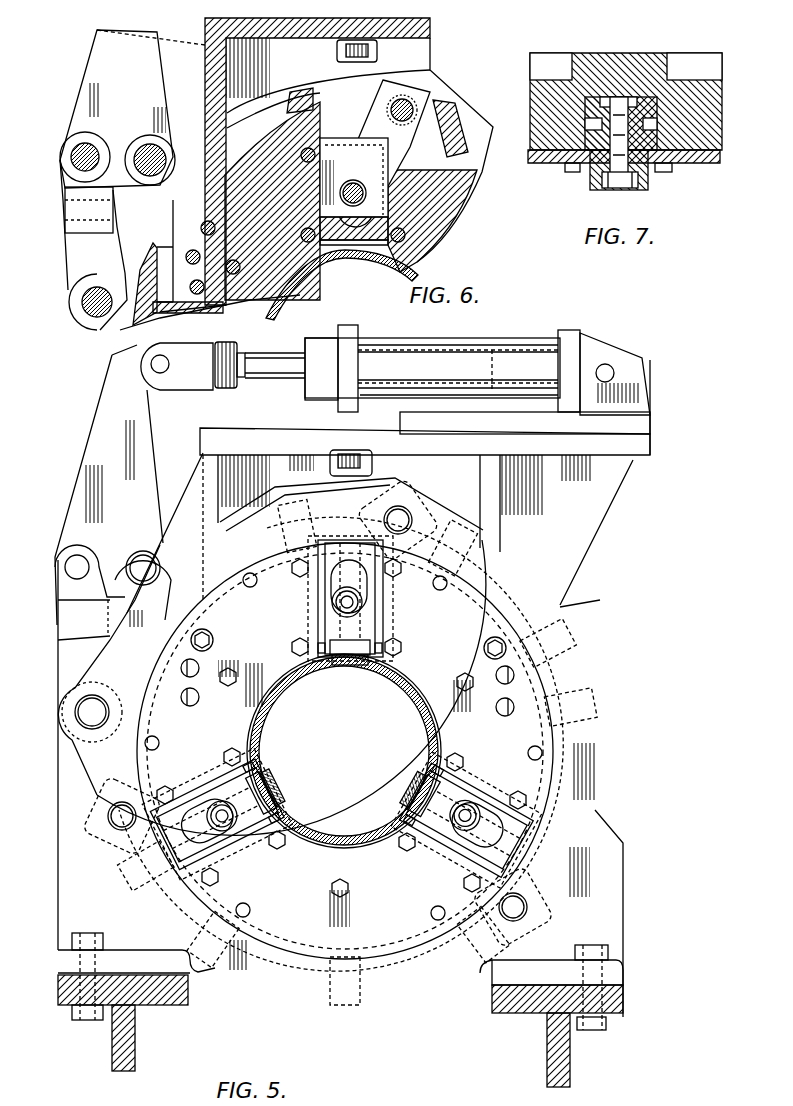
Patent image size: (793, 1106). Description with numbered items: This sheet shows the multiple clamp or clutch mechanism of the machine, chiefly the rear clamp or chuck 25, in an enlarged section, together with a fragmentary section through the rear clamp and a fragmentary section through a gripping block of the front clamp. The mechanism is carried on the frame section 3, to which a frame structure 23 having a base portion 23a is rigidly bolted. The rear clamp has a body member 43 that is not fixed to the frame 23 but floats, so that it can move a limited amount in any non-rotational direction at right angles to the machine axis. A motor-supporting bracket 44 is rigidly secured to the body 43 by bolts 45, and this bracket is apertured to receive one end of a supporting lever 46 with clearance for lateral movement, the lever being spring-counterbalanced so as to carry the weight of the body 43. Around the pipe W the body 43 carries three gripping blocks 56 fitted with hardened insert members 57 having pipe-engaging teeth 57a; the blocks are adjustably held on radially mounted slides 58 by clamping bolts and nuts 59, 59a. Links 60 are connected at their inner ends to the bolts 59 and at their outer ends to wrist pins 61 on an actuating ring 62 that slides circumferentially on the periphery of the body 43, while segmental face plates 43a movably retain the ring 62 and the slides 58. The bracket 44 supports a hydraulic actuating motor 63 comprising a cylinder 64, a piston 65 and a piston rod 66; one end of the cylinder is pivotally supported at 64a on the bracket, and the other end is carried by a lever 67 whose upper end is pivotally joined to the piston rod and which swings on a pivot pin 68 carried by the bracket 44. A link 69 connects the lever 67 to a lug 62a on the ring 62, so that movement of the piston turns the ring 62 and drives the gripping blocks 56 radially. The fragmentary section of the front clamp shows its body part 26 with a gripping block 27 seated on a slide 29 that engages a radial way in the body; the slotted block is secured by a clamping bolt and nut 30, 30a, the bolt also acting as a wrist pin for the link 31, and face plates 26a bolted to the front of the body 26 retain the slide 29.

In FIG. 5, the frame section 3 is at (108, 1062).
In FIG. 5, the frame structure 23 is at (58, 883).
In FIG. 5, the base portion 23a is at (72, 960).
In FIG. 5, the rear clamp or chuck 25 is at (582, 603).
In FIG. 7, the body part 26 is at (548, 100).
In FIG. 7, the face plates 26a is at (705, 165).
In FIG. 7, the pipe gripping blocks 27 is at (590, 182).
In FIG. 7, the slides 29 is at (660, 136).
In FIG. 7, the clamping bolt 30 is at (585, 126).
In FIG. 7, the clamping nut 30a is at (630, 186).
In FIG. 7, the links 31 is at (652, 120).
In FIG. 6, the body member 43 is at (440, 218).
In FIG. 5, the body member 43 is at (553, 735).
In FIG. 5, the segmental face plates 43a is at (207, 580).
In FIG. 6, the motor-supporting bracket 44 is at (213, 62).
In FIG. 5, the motor-supporting bracket 44 is at (593, 510).
In FIG. 6, the bolts 45 is at (200, 292).
In FIG. 5, the bolts 45 is at (192, 668).
In FIG. 6, the supporting lever 46 is at (338, 50).
In FIG. 5, the supporting lever 46 is at (360, 438).
In FIG. 5, the gripping blocks 56 is at (384, 612).
In FIG. 5, the insert members 57 is at (328, 648).
In FIG. 5, the pipe-engaging teeth 57a is at (366, 665).
In FIG. 6, the slides 58 is at (358, 242).
In FIG. 5, the slides 58 is at (318, 540).
In FIG. 6, the clamping bolts 59 is at (350, 206).
In FIG. 5, the clamping bolts 59 is at (334, 600).
In FIG. 5, the clamping nuts 59a is at (370, 600).
In FIG. 6, the links 60 is at (357, 157).
In FIG. 5, the links 60 is at (432, 548).
In FIG. 6, the wrist pins 61 is at (412, 100).
In FIG. 5, the wrist pins 61 is at (408, 512).
In FIG. 6, the actuating ring 62 is at (455, 100).
In FIG. 5, the actuating ring 62 is at (572, 648).
In FIG. 6, the lug 62a is at (70, 302).
In FIG. 5, the lug 62a is at (80, 740).
In FIG. 5, the hydraulic actuating motor 63 is at (336, 398).
In FIG. 5, the cylinder 64 is at (425, 398).
In FIG. 5, the pivotal support 64a is at (612, 372).
In FIG. 5, the piston 65 is at (506, 398).
In FIG. 5, the piston rod 66 is at (263, 378).
In FIG. 6, the lever 67 is at (95, 72).
In FIG. 5, the lever 67 is at (90, 458).
In FIG. 6, the pivot pin 68 is at (148, 145).
In FIG. 5, the pivot pin 68 is at (140, 556).
In FIG. 6, the link 69 is at (65, 222).
In FIG. 5, the link 69 is at (58, 632).
In FIG. 6, the workpiece W is at (282, 292).
In FIG. 5, the workpiece W is at (276, 716).